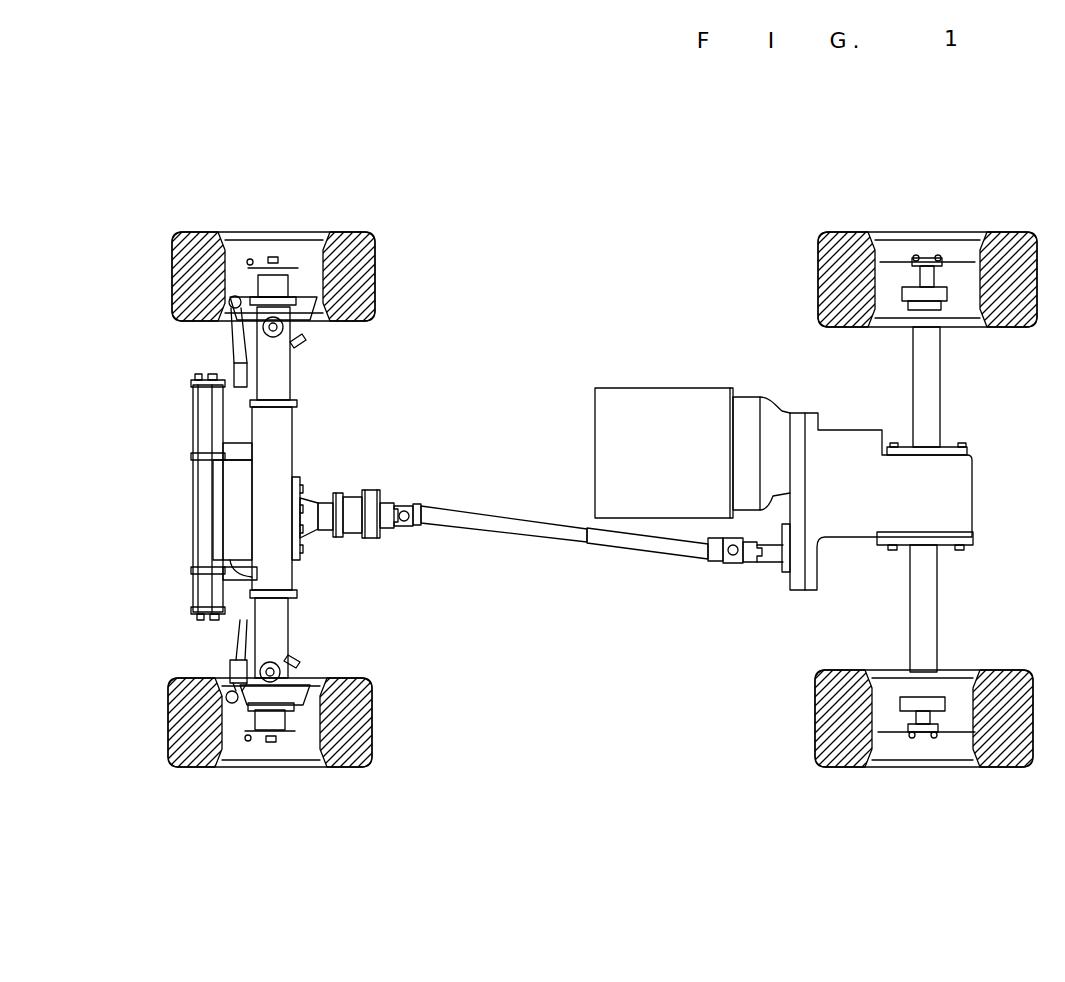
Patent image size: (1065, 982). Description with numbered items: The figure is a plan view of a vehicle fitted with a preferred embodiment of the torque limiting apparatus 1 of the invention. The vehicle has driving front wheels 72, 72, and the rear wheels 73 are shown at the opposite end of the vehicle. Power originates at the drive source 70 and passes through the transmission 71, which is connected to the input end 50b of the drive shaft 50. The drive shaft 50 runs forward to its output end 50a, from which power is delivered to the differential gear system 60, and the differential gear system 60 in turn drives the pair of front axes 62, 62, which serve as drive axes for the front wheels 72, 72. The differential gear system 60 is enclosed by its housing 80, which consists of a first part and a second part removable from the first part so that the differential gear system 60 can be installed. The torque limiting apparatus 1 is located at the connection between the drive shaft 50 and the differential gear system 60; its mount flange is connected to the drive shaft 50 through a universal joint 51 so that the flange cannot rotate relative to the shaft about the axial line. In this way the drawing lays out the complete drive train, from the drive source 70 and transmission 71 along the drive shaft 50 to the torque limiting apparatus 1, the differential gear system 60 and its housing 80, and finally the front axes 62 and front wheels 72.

The torque limiting apparatus 1 is at (356, 489).
The drive shaft 50 is at (601, 613).
The output end of drive shaft 50a is at (430, 523).
The input end of drive shaft 50b is at (697, 548).
The universal joint 51 is at (398, 528).
The differential gear system 60 is at (322, 553).
The front axes 62 is at (247, 400).
The drive source 70 is at (650, 407).
The transmission 71 is at (787, 427).
The front wheels 72 is at (176, 258).
The rear wheels 73 is at (850, 248).
The housing of differential gear system 80 is at (253, 520).